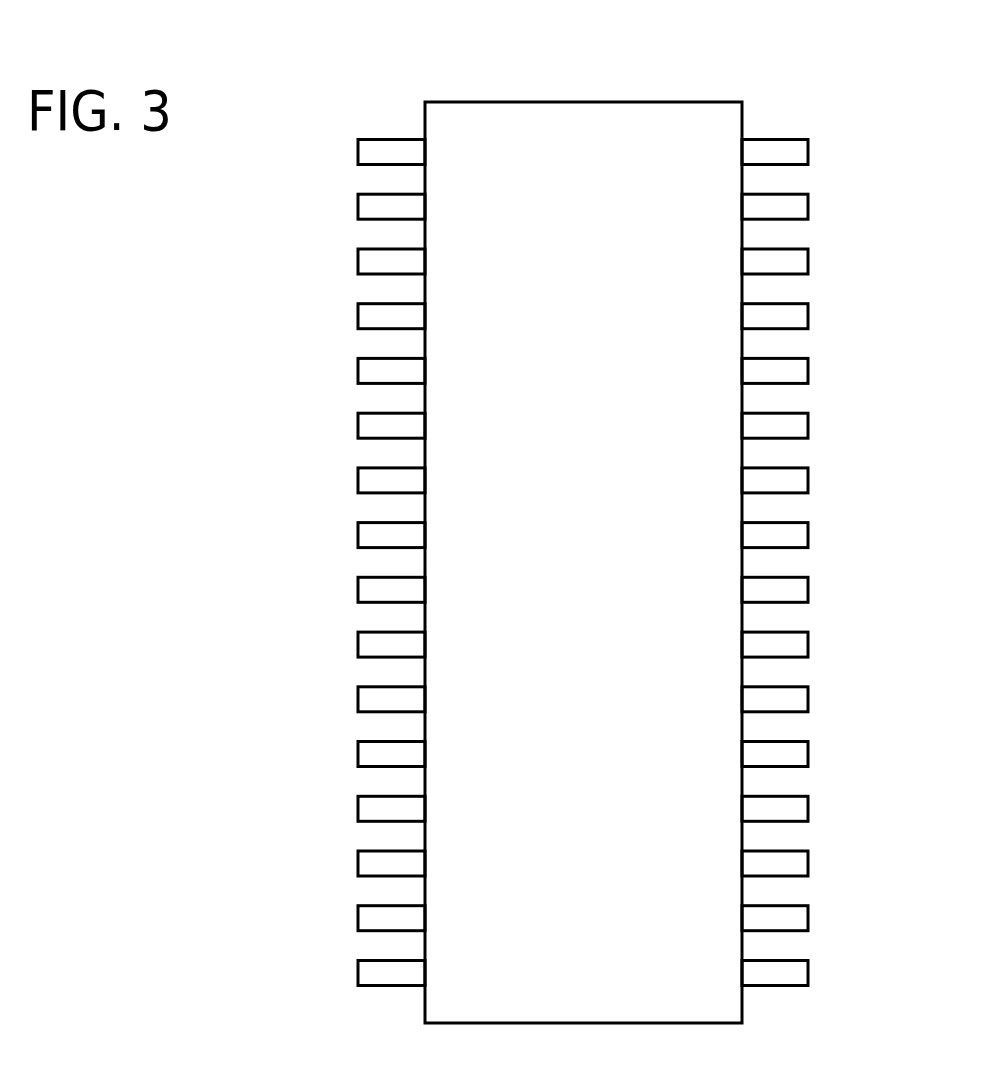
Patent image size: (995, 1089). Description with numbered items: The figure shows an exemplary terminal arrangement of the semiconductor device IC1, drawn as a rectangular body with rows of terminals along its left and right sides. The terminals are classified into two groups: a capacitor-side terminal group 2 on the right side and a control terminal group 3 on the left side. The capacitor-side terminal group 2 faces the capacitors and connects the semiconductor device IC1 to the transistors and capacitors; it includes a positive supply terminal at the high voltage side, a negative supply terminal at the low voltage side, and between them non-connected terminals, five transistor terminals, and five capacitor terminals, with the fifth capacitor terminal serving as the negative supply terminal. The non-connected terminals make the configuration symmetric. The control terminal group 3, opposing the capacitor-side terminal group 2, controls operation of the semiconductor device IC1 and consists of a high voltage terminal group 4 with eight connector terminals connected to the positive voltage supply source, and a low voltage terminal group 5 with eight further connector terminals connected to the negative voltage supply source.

The semiconductor device IC1 is at (551, 95).
The capacitor-side terminal group 2 is at (842, 130).
The control terminal group 3 is at (217, 129).
The high voltage terminal group 4 is at (335, 129).
The low voltage terminal group 5 is at (335, 569).